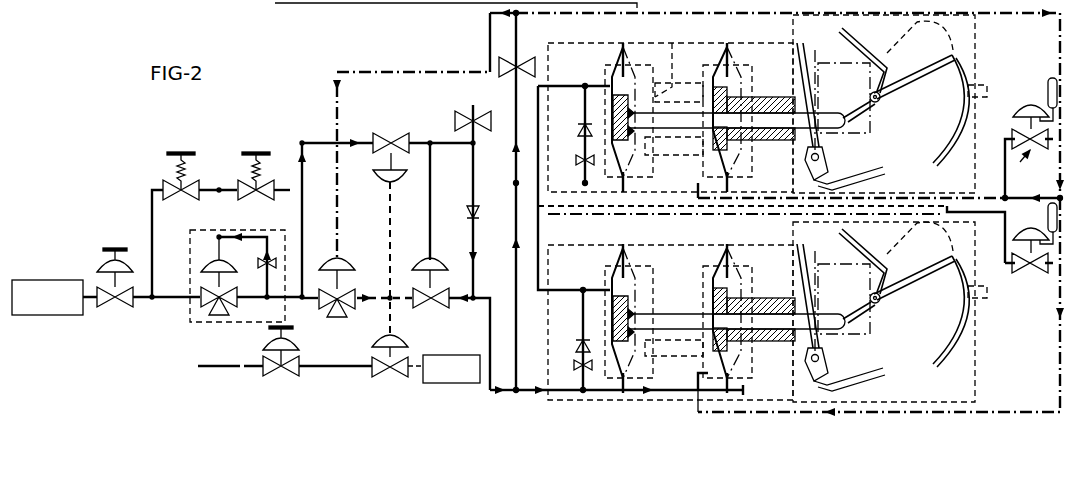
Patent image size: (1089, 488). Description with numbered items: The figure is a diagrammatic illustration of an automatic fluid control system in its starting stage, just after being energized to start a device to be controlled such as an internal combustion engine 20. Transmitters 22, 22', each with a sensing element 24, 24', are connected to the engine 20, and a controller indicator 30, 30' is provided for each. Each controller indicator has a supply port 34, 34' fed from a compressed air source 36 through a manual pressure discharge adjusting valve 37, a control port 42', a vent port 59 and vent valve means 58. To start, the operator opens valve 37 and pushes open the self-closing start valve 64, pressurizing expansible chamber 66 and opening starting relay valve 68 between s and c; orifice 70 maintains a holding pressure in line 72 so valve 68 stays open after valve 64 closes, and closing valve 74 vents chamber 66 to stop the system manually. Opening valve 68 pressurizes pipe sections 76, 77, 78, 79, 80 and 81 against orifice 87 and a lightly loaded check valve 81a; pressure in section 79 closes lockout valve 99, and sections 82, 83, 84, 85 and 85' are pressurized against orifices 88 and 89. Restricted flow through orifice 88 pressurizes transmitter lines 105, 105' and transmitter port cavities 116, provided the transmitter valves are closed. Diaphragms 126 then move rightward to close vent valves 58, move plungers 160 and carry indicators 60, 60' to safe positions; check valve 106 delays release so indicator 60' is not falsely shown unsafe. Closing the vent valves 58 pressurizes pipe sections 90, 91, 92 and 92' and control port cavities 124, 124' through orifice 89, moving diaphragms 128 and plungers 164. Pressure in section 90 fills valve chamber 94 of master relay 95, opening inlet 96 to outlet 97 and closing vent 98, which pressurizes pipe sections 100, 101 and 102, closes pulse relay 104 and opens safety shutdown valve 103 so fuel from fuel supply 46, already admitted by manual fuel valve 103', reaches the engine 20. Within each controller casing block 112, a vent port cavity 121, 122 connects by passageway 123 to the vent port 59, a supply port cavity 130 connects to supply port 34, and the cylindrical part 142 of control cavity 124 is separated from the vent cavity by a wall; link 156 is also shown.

The engine 20 is at (468, 355).
The transmitter 22 is at (1028, 165).
The transmitter 22' is at (1034, 272).
The sensing element 24 is at (1034, 102).
The sensing element 24' is at (1035, 228).
The controller indicator 30 is at (884, 104).
The controller indicator 30' is at (884, 312).
The supply port 34 is at (536, 217).
The supply port 34' is at (102, 13).
The source of pressure fluid 36 is at (43, 315).
The pressure discharge adjusting valve 37 is at (112, 305).
The control port 42' is at (470, 211).
The fuel supply 46 is at (238, 366).
The vent valve means 58 is at (614, 122).
The vent port 59 is at (675, 20).
The indicator 60 is at (930, 93).
The indicator 60' is at (930, 294).
The start valve 64 is at (176, 195).
The expansible chamber 66 is at (205, 266).
The starting relay valve 68 is at (203, 280).
The orifice 70 is at (258, 265).
The line 72 is at (272, 230).
The valve 74 is at (273, 172).
The pipe section 76 is at (296, 298).
The pipe section 77 is at (304, 234).
The pipe section 78 is at (316, 142).
The pipe section 79 is at (432, 205).
The pipe section 80 is at (440, 143).
The pipe section 81 is at (470, 183).
The check valve 81a is at (476, 207).
The pipe section 82 is at (448, 298).
The pipe section 83 is at (490, 367).
The pipe section 84 is at (513, 70).
The pipe section 85 is at (574, 188).
The pipe section 85' is at (662, 397).
The orifice 87 is at (465, 112).
The orifice 88 is at (577, 162).
The orifice 89 is at (536, 68).
The pipe section 90 is at (414, 66).
The pipe section 91 is at (985, 15).
The pipe section 92 is at (1034, 186).
The pipe section 92' is at (881, 307).
The valve chamber 94 is at (344, 258).
The master relay 95 is at (297, 360).
The master relay valve inlet 96 is at (330, 296).
The outlet 97 is at (352, 278).
The vent 98 is at (347, 316).
The lockout valve 99 is at (443, 280).
The pipe section 100 is at (373, 292).
The pipe section 101 is at (387, 207).
The pipe section 102 is at (394, 316).
The safety shutdown valve 103 is at (361, 360).
The manual fuel valve 103' is at (326, 386).
The pulse relay 104 is at (388, 133).
The transmitter line 105 is at (851, 186).
The transmitter line 105' is at (744, 228).
The check valve 106 is at (578, 136).
The block 112 is at (690, 213).
The transmitter port cavity 116 is at (612, 74).
The cylinder part of vent port cavity 121 is at (630, 72).
The flared part of vent port cavity 122 is at (659, 25).
The passageway 123 is at (680, 65).
The control port cavity 124 is at (693, 117).
The control port cavity 124' is at (676, 362).
The diaphragm 126 is at (623, 150).
The diaphragm 128 is at (744, 268).
The supply port cavity 130 is at (756, 150).
The cylindrical part of control cavity 142 is at (678, 104).
The link 156 is at (810, 84).
The plunger 160 is at (822, 112).
The plunger 164 is at (762, 112).